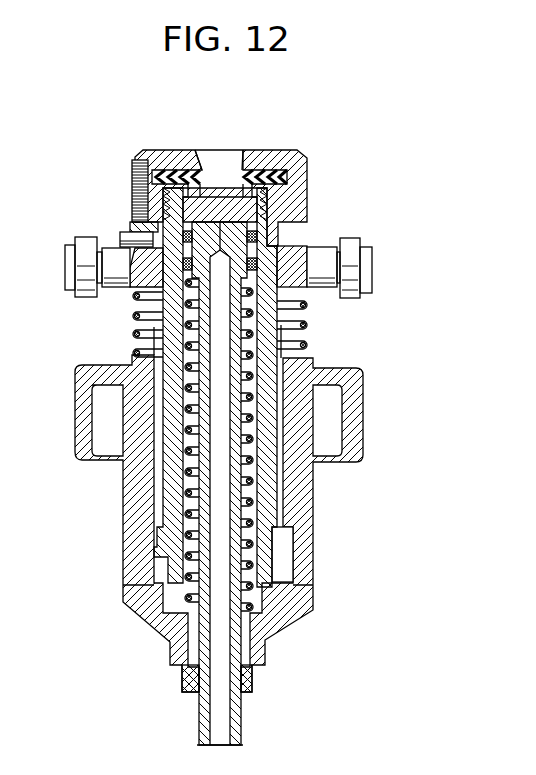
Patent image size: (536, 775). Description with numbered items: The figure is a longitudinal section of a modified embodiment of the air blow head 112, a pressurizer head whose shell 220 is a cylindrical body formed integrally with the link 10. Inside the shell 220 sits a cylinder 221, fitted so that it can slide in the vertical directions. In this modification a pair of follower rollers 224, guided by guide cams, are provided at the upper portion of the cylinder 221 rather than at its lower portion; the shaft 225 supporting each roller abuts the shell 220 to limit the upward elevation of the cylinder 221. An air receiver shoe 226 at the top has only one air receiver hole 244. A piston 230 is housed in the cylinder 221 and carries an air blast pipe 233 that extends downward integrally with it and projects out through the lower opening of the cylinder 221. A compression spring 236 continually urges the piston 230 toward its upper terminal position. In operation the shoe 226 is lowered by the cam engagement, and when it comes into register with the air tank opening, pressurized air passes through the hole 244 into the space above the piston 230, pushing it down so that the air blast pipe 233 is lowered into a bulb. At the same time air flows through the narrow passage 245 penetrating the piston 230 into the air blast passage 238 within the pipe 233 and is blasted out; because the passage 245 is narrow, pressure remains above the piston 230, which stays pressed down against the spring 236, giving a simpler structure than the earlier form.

The link 10 is at (243, 492).
The air blow head 112 is at (252, 492).
The shell 220 is at (309, 490).
The cylinder 221 is at (163, 345).
The follower rollers 224 is at (82, 298).
The shaft 225 is at (113, 247).
The air receiver shoe 226 is at (300, 161).
The piston 230 is at (253, 241).
The air blast pipe 233 is at (240, 712).
The compression spring 236 is at (188, 468).
The air blast passage 238 is at (210, 646).
The air receiver hole 244 is at (202, 150).
The narrow passage 245 is at (233, 222).